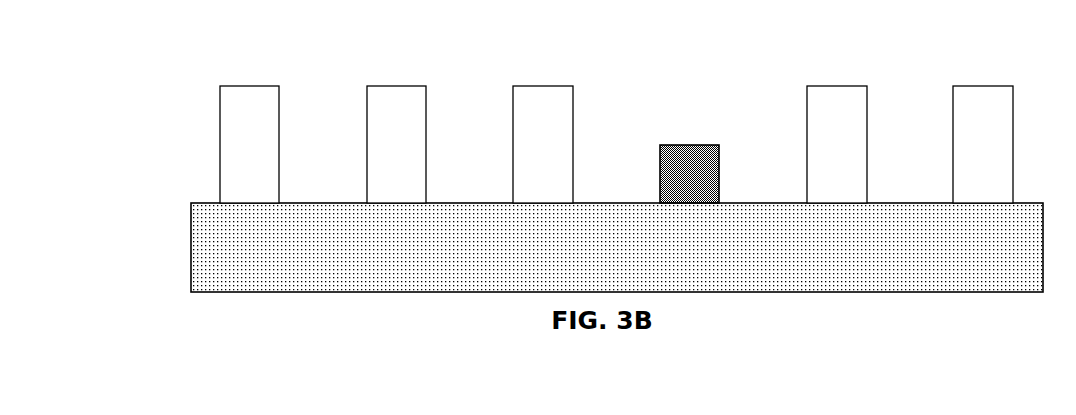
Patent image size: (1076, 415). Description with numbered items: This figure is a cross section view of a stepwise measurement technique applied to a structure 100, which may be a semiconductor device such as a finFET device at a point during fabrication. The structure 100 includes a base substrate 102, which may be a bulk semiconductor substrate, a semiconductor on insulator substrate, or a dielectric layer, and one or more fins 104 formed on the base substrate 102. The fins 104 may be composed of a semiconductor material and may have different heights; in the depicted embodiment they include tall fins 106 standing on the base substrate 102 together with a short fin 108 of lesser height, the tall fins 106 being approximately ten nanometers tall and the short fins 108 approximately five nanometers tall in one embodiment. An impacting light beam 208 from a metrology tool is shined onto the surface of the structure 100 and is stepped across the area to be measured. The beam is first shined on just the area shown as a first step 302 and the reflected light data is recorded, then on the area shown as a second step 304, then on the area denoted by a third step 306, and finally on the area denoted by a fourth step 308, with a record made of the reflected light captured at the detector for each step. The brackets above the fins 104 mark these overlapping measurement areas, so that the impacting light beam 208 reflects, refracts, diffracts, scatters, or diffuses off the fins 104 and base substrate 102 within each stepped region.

The structure 100 is at (127, 42).
The base substrate 102 is at (598, 254).
The fins 104 is at (174, 87).
The tall fins 106 is at (524, 155).
The short fins 108 is at (670, 185).
The impacting light beam 208 is at (250, 28).
The first step 302 is at (190, 78).
The second step 304 is at (315, 21).
The third step 306 is at (470, 65).
The fourth step 308 is at (1043, 35).